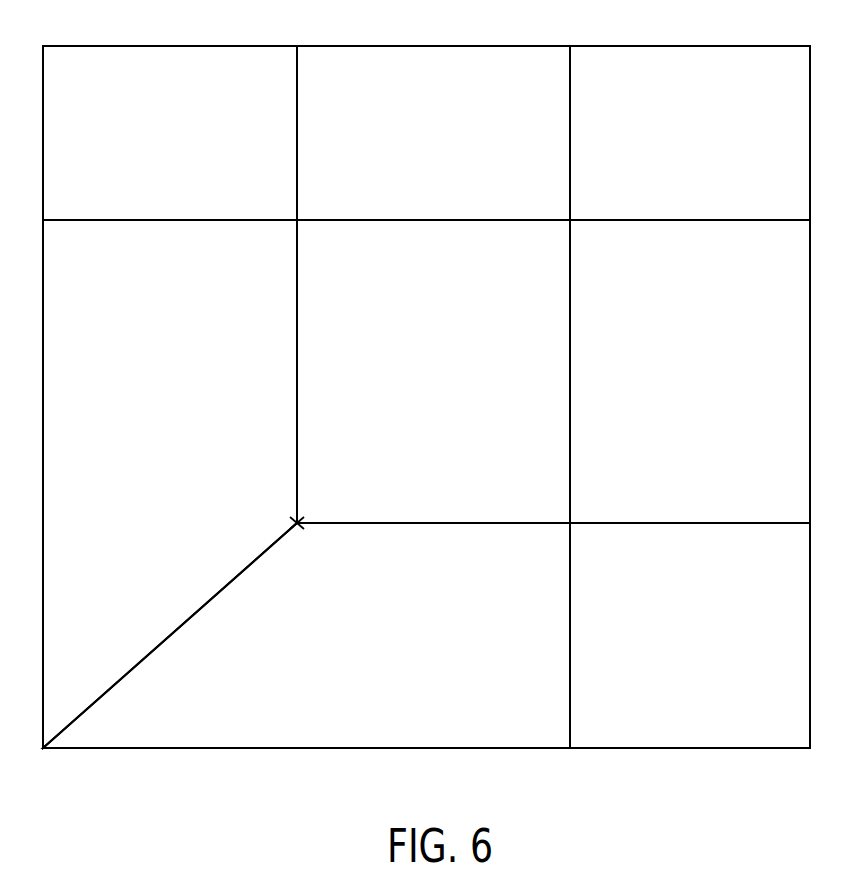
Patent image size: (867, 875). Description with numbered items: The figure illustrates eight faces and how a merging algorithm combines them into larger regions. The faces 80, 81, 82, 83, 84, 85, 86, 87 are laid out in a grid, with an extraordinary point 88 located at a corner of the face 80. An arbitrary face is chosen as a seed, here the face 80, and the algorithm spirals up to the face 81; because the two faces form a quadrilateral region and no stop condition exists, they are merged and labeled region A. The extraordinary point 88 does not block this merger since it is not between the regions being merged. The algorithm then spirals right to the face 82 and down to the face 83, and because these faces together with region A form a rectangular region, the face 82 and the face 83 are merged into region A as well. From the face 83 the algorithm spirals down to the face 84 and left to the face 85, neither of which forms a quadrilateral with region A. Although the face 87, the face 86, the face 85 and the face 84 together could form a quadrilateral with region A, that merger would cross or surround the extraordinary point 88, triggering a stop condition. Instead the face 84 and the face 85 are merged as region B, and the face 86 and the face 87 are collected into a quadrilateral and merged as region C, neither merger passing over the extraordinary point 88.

The face 80 is at (388, 466).
The face 81 is at (387, 189).
The face 82 is at (645, 189).
The face 83 is at (645, 466).
The face 84 is at (645, 692).
The face 85 is at (388, 692).
The face 86 is at (133, 467).
The face 87 is at (133, 190).
The extraordinary point 88 is at (309, 513).